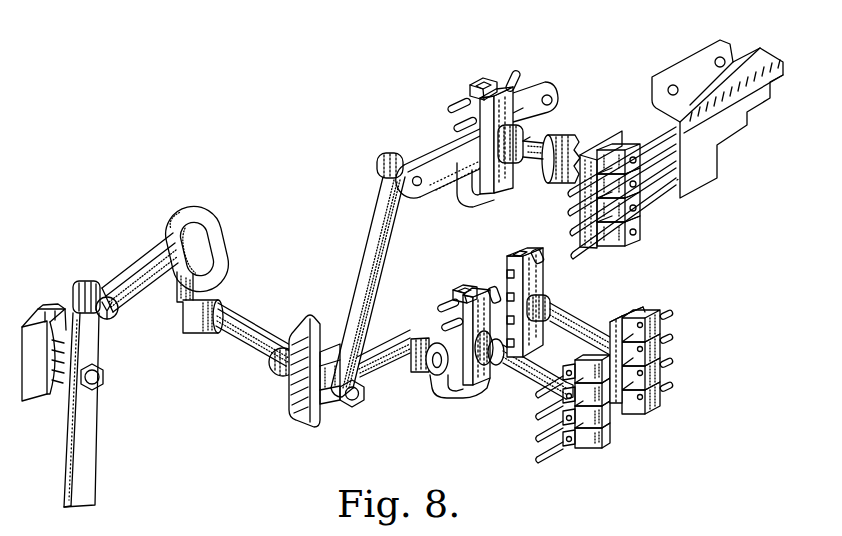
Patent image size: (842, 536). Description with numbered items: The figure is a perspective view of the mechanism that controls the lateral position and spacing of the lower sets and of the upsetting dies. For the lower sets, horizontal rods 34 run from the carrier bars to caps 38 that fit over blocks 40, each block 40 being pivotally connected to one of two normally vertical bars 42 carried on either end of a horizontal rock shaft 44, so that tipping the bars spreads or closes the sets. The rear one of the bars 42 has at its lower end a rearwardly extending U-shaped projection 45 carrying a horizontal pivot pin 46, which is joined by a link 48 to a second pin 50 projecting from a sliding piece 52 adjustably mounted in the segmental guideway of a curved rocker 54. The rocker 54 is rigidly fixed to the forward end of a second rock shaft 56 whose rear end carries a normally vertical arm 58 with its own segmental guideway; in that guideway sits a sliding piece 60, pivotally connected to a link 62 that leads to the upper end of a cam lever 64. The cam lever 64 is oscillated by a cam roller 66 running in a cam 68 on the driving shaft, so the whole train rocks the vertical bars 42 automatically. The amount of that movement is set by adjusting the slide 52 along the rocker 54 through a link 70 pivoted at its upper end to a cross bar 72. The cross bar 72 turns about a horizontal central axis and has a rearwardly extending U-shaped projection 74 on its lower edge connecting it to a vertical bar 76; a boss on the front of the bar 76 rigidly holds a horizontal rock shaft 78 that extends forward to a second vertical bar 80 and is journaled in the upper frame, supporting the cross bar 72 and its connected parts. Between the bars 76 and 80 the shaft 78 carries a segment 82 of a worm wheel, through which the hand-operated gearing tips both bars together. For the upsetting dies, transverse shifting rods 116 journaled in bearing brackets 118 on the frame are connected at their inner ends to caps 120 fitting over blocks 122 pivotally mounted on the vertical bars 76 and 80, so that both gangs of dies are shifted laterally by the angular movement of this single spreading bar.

The horizontal rod 34 is at (537, 250).
The cap 38 is at (513, 262).
The block 40 is at (637, 317).
The normally vertical bar 42 is at (619, 320).
The horizontal rock shaft 44 is at (527, 377).
The U-shaped projection 45 is at (450, 400).
The horizontal pivot pin 46 is at (433, 372).
The link 48 is at (383, 360).
The pin 50 is at (354, 408).
The sliding piece 52 is at (322, 360).
The curved rocker 54 is at (300, 412).
The second rock shaft 56 is at (253, 337).
The normally vertical arm 58 is at (220, 262).
The sliding piece 60 is at (205, 247).
The link 62 is at (140, 286).
The cam lever 64 is at (90, 344).
The cam roller 66 is at (52, 365).
The cam 68 is at (36, 322).
The link 70 is at (368, 260).
The cross bar 72 is at (430, 157).
The U-shaped projection 74 is at (472, 201).
The vertical bar 76 is at (517, 73).
The horizontal rock shaft 78 is at (562, 130).
The second vertical bar 80 is at (600, 140).
The segment of a worm wheel 82 is at (543, 176).
The transverse shifting rod 116 is at (453, 130).
The bearing bracket 118 is at (703, 143).
The cap 120 is at (480, 83).
The block 122 is at (677, 177).